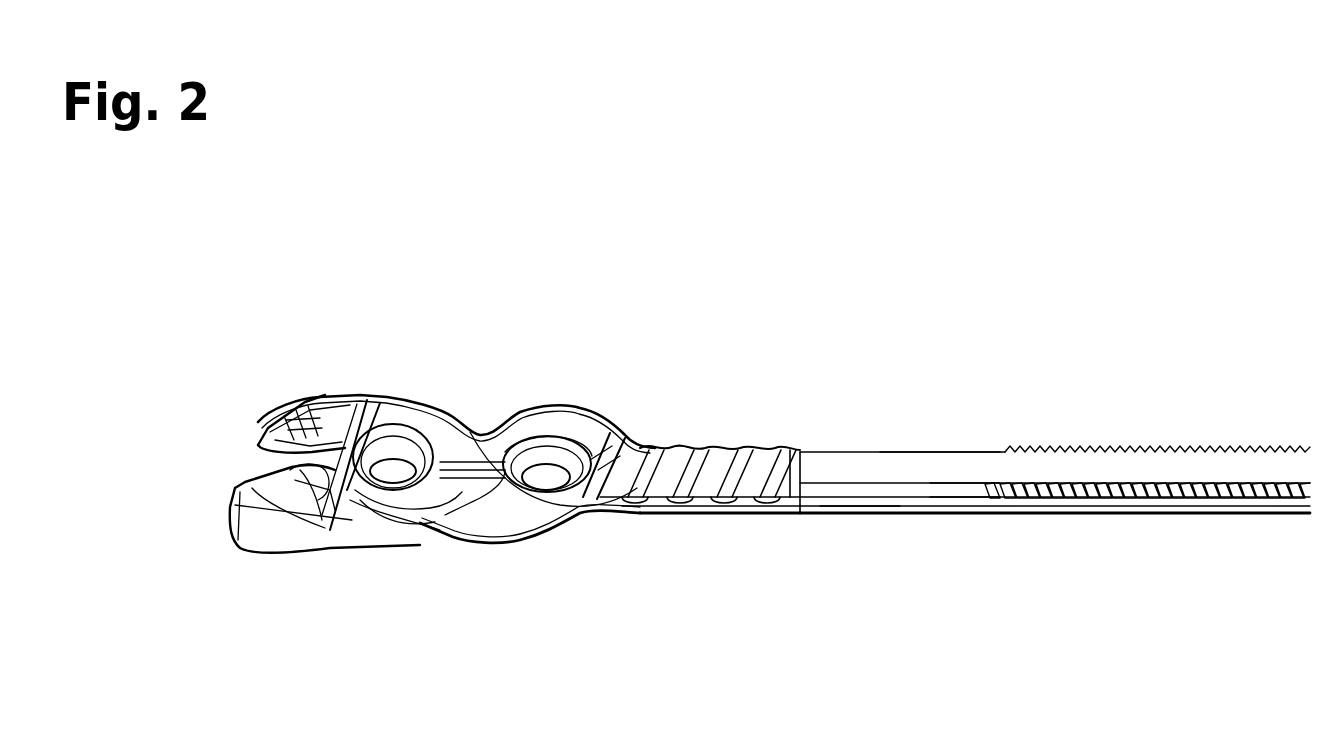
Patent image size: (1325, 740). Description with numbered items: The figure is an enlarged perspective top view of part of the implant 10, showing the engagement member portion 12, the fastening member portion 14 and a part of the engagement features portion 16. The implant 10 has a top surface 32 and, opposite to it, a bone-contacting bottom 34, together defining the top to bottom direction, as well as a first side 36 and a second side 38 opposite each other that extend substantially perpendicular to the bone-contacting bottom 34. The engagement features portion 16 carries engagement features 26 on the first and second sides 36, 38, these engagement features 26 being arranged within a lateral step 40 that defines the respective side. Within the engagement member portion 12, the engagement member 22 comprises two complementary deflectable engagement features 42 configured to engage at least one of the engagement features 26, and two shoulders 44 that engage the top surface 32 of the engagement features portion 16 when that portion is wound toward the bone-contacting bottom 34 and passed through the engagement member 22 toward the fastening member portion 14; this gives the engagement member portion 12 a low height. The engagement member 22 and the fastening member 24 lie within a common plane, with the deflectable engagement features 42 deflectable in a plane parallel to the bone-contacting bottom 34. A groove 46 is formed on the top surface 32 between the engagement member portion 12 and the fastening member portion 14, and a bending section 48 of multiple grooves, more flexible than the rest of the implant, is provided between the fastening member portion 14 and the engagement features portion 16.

The implant 10 is at (858, 258).
The engagement member portion 12 is at (312, 393).
The fastening member portion 14 is at (490, 395).
The engagement features portion 16 is at (1105, 392).
The engagement member 22 is at (263, 533).
The fastening member 24 is at (507, 470).
The engagement features 26 is at (1190, 492).
The top surface 32 is at (800, 508).
The bone-contacting bottom 34 is at (853, 515).
The first side 36 is at (913, 452).
The second side 38 is at (957, 490).
The lateral step 40 is at (1073, 500).
The deflectable engagement features 42 is at (293, 427).
The shoulders 44 is at (372, 440).
The groove 46 is at (407, 507).
The bending section 48 is at (662, 497).